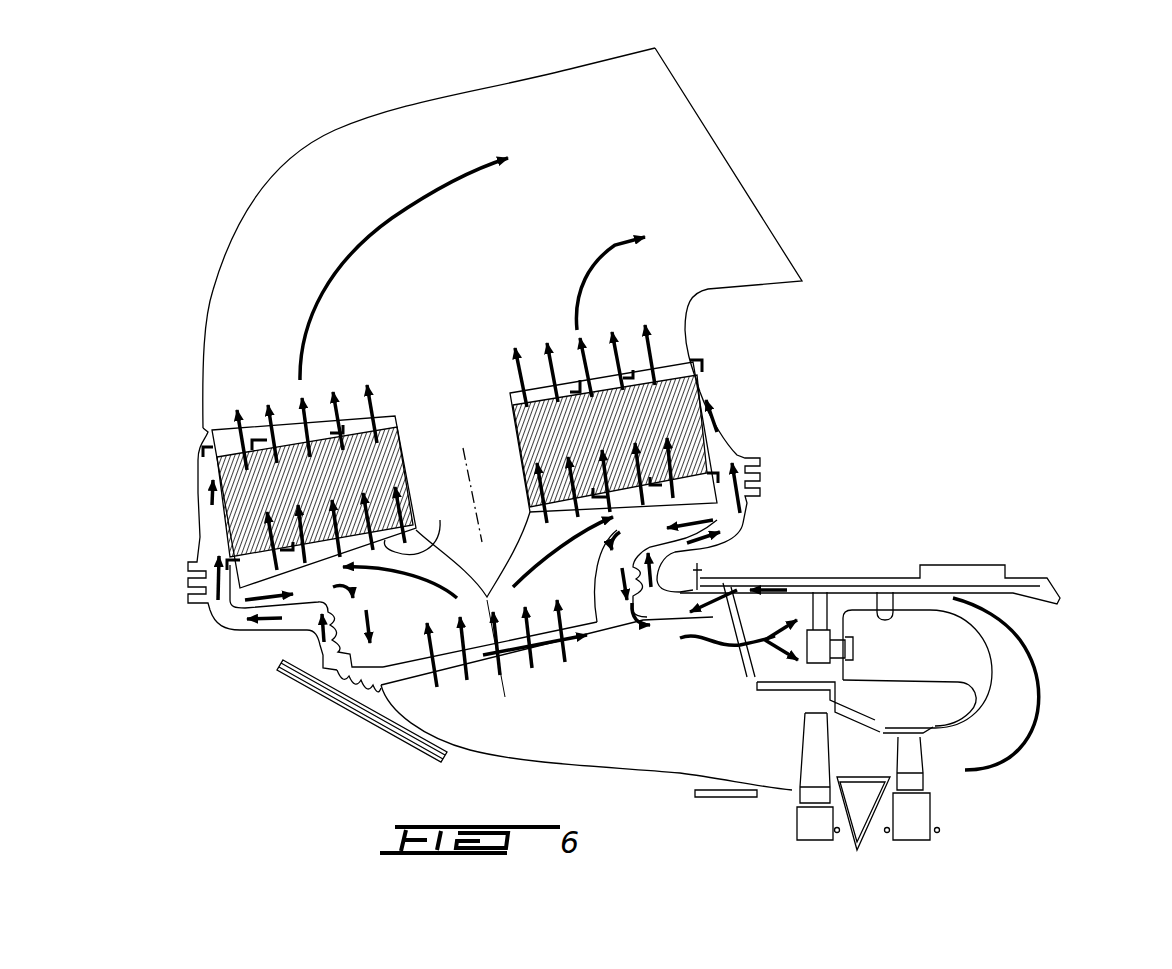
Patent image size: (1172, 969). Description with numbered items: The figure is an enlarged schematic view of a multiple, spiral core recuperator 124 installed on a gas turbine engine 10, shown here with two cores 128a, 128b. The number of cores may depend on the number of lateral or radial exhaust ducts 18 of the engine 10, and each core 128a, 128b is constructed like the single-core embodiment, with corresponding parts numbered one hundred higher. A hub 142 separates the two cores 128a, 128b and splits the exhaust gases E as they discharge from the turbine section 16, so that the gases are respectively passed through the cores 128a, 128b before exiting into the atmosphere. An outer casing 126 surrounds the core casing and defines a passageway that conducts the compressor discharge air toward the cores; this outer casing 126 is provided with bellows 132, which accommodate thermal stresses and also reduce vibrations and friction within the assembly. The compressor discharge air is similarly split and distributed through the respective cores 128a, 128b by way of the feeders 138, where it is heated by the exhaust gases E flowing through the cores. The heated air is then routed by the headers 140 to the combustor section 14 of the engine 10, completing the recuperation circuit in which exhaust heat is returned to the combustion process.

The gas turbine engine 10 is at (1043, 528).
The combustor section 14 is at (987, 647).
The turbine section 16 is at (795, 738).
The lateral exhaust duct 18 is at (714, 182).
The recuperator 124 is at (478, 305).
The outer casing 126 is at (232, 630).
The first core 128a is at (667, 413).
The second core 128b is at (380, 457).
The bellows 132 is at (762, 480).
The feeders 138 is at (313, 420).
The headers 140 is at (405, 553).
The hub 142 is at (522, 536).